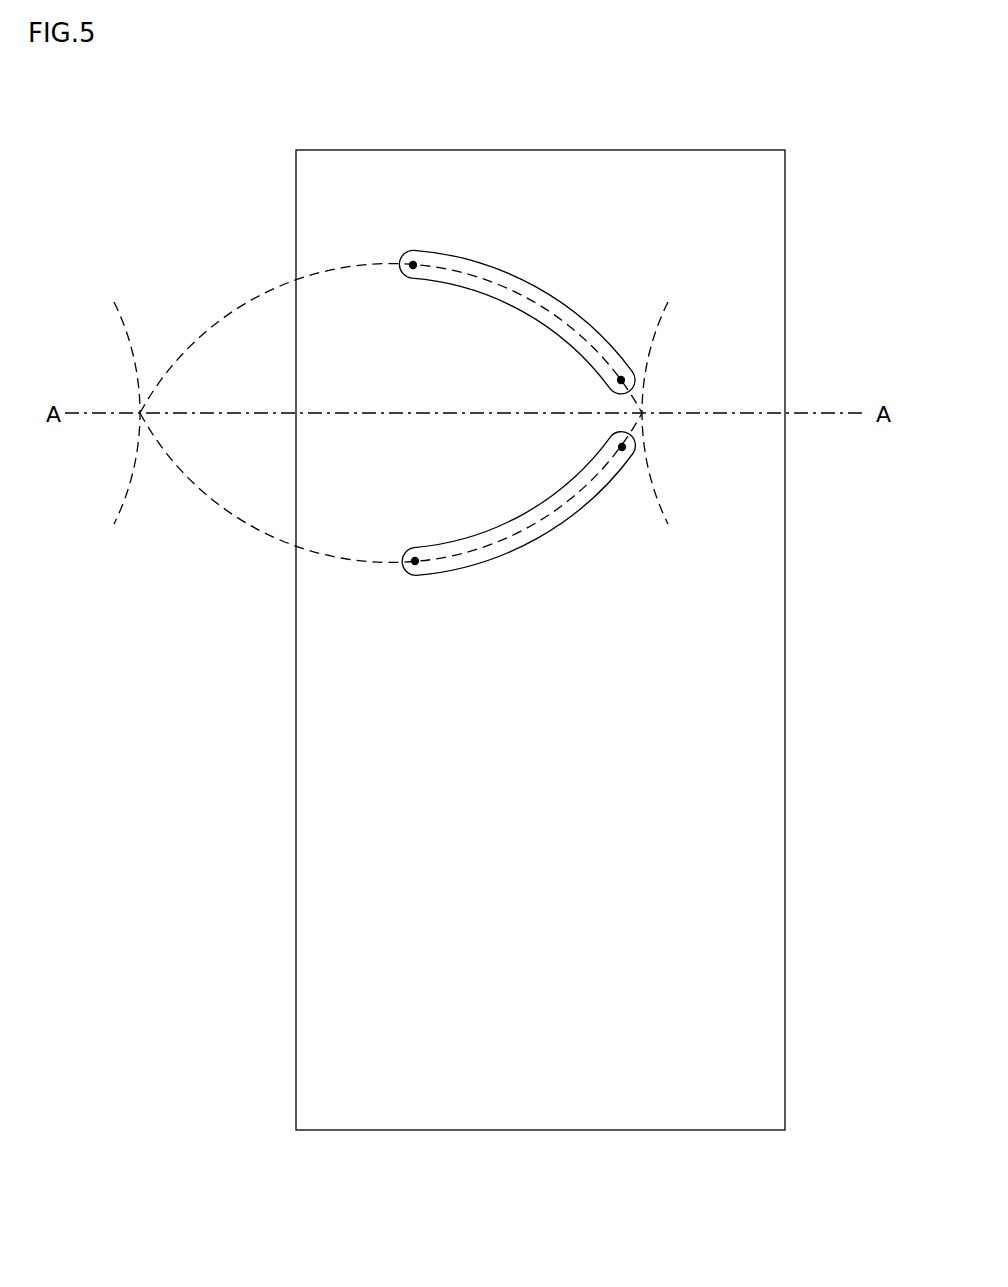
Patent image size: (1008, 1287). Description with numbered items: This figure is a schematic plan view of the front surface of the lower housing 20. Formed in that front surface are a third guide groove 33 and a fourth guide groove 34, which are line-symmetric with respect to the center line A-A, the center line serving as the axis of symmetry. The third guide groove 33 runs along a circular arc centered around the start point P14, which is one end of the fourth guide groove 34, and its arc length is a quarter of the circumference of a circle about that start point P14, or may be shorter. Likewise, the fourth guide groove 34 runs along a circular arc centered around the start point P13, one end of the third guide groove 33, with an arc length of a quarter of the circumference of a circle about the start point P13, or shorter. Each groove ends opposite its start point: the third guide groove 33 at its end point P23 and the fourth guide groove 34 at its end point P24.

The lower housing 20 is at (784, 208).
The third guide groove 33 is at (515, 547).
The fourth guide groove 34 is at (527, 282).
The start point of third guide groove P13 is at (413, 562).
The start point of fourth guide groove P14 is at (413, 262).
The end point of third guide groove P23 is at (625, 449).
The end point of fourth guide groove P24 is at (624, 379).